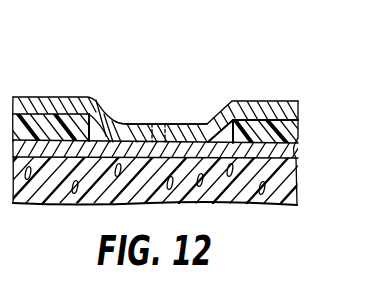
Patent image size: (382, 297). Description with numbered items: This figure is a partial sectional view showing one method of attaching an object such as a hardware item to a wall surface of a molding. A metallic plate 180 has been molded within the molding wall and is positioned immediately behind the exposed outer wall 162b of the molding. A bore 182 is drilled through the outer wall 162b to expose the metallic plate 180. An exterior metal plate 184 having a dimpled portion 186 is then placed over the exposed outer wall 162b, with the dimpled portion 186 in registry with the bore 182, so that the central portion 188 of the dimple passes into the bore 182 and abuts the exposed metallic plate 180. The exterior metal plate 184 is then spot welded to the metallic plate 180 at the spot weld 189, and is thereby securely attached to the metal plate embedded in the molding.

The metallic plate 180 is at (297, 152).
The exposed outer wall 162b is at (290, 131).
The exterior metal plate 184 is at (172, 96).
The dimpled portion 186 is at (101, 106).
The bore 182 is at (231, 101).
The central portion of the dimple 188 is at (127, 123).
The spot weld 189 is at (163, 122).